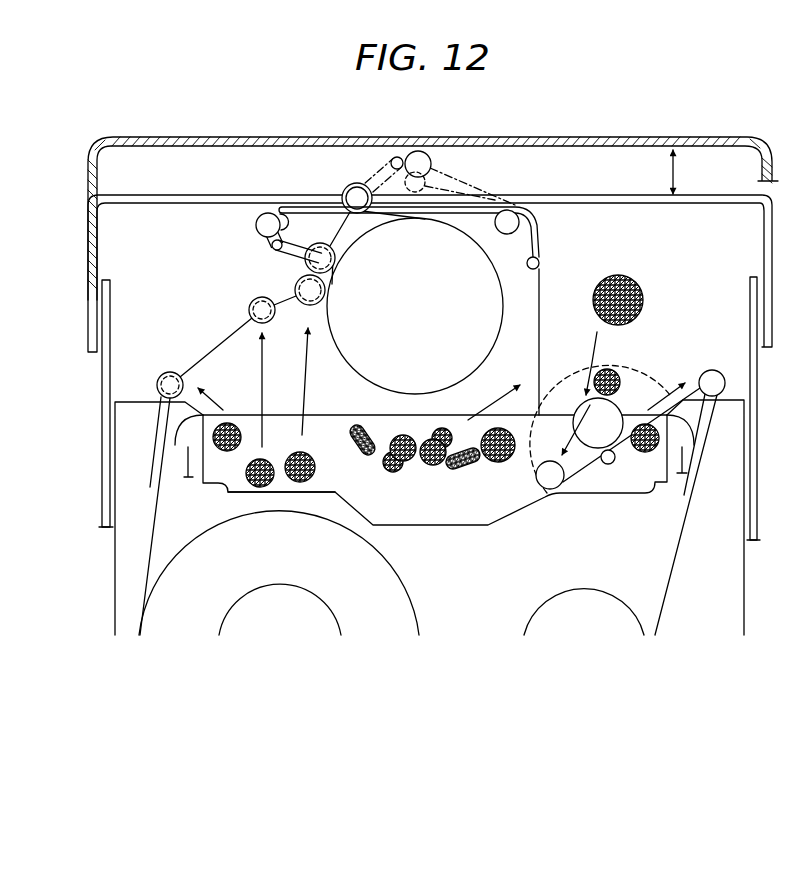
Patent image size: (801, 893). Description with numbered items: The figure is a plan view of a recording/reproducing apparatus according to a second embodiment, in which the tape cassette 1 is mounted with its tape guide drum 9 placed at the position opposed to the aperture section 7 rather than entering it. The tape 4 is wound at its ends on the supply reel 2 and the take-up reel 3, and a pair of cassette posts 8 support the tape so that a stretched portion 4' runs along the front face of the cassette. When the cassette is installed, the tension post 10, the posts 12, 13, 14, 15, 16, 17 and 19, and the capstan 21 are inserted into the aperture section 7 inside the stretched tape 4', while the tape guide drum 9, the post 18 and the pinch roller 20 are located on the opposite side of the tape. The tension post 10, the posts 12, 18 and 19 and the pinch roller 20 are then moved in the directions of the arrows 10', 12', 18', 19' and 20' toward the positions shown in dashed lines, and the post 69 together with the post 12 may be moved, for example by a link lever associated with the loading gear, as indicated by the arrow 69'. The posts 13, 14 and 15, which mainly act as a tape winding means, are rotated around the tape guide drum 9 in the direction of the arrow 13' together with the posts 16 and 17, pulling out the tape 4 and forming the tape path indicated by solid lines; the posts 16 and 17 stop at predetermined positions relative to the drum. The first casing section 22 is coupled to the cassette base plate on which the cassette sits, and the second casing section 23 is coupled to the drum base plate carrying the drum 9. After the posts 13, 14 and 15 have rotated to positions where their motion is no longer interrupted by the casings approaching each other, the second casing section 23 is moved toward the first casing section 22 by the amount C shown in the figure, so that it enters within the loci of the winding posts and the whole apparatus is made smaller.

The tape cassette 1 is at (745, 605).
The supply reel 2 is at (222, 618).
The take-up reel 3 is at (533, 617).
The tape 4 is at (395, 488).
The stretched portion of the tape 4' is at (326, 450).
The aperture section 7 is at (213, 492).
The cassette posts 8 is at (174, 438).
The tape guide drum 9 is at (516, 298).
The tension post 10 is at (183, 476).
The arrow indicating direction of movement of the tension post 10' is at (220, 383).
The post 12 is at (301, 411).
The arrow indicating direction of movement of the post 12' is at (327, 381).
The post 13 is at (410, 329).
The arrow indicating rotational movement of the tape winding posts 13' is at (494, 385).
The post 14 is at (388, 166).
The post 15 is at (416, 160).
The post 16 is at (495, 232).
The post 17 is at (532, 244).
The post 18 is at (618, 433).
The arrow indicating direction of movement of the post 18' is at (567, 403).
The post 19 is at (684, 478).
The arrow indicating direction of movement of the post 19' is at (672, 376).
The pinch roller 20 is at (618, 281).
The arrow indicating direction of movement of the pinch roller 20' is at (600, 394).
The capstan 21 is at (614, 462).
The first casing section 22 is at (98, 369).
The second casing section 23 is at (150, 148).
The post 69 is at (244, 423).
The arrow indicating direction of movement of the post 69' is at (280, 390).
The amount of movement of the second casing section C is at (681, 172).